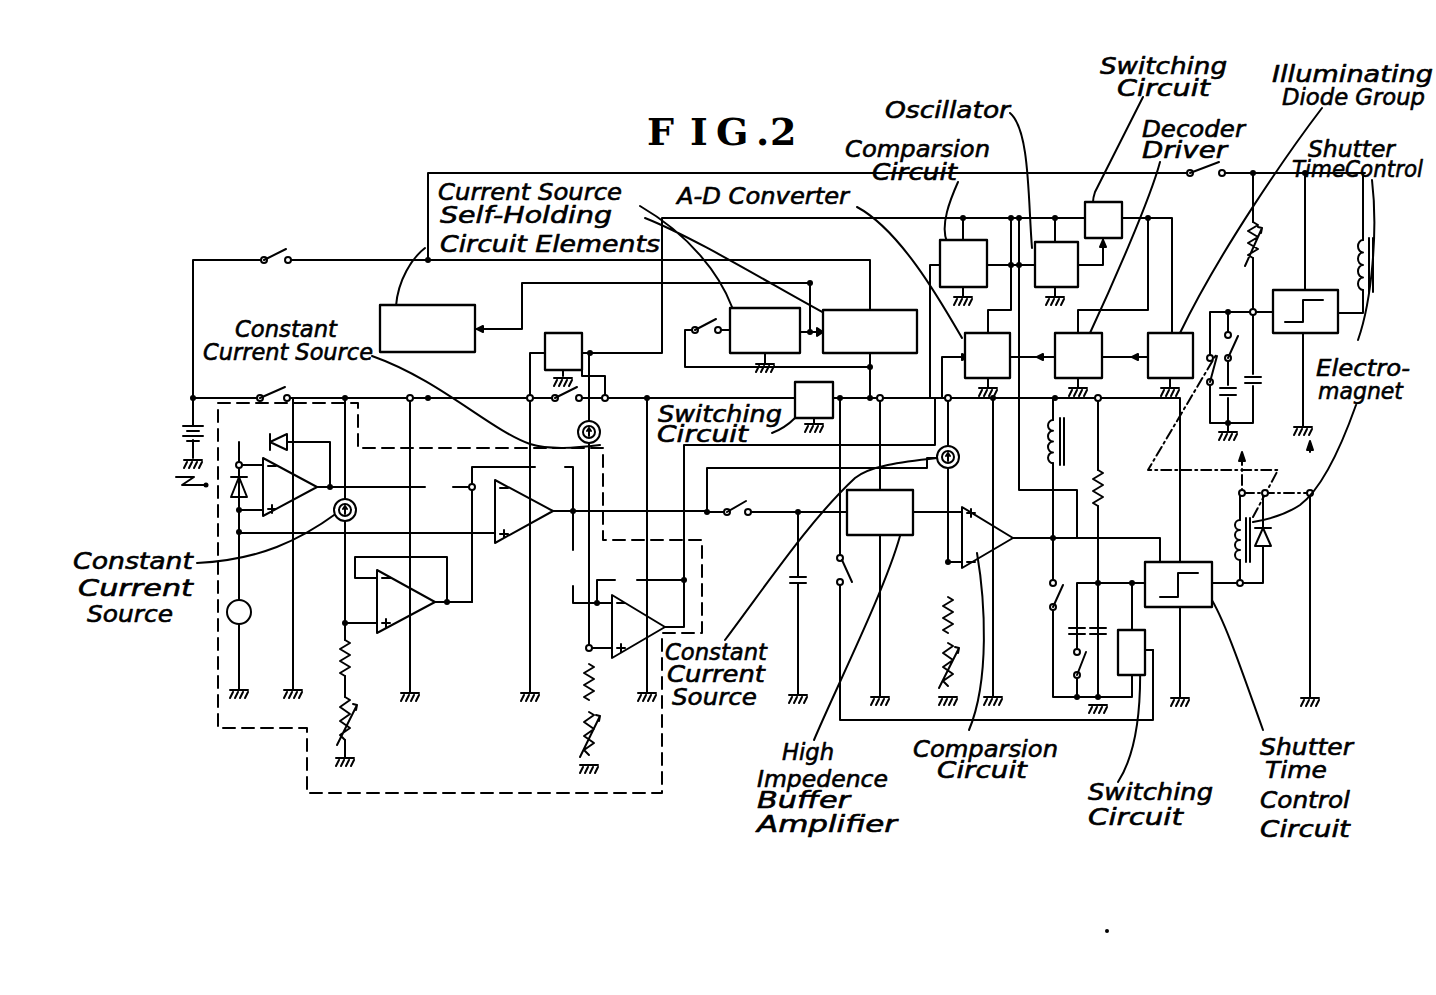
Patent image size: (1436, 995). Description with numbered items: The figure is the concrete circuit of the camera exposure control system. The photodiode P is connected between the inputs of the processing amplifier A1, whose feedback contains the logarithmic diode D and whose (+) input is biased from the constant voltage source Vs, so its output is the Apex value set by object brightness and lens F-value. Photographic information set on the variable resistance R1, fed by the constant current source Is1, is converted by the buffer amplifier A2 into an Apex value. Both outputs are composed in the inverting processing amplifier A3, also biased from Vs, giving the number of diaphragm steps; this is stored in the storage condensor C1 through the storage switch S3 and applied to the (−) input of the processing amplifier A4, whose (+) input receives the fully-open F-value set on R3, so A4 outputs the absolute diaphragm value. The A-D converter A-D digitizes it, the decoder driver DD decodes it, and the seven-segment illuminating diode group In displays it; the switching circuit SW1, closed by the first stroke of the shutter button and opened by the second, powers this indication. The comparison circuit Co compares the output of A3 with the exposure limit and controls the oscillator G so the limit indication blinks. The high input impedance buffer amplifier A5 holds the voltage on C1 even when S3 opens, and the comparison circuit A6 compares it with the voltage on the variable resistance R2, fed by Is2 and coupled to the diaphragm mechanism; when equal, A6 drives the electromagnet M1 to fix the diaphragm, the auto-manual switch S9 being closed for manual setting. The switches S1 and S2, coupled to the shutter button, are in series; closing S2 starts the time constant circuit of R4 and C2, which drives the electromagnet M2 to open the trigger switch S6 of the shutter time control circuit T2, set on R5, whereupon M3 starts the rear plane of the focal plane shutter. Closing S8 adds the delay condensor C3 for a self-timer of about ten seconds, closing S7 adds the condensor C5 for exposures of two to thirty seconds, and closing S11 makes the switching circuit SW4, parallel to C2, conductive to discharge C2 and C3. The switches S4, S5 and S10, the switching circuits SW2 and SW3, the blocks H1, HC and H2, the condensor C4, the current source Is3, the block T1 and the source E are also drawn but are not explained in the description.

The switch S1 is at (288, 388).
The switch S2 is at (560, 405).
The storage switch S3 is at (740, 516).
The switch S4 is at (1208, 178).
The switch S5 is at (275, 270).
The trigger switch S6 is at (1200, 400).
The switch for long time exposure S7 is at (1235, 346).
The switch S8 is at (1073, 667).
The auto-manual switching over switch S9 is at (1055, 595).
The switch S10 is at (705, 318).
The switch S11 is at (848, 585).
The switching circuit SW1 is at (567, 354).
The switching circuit SW2 is at (817, 400).
The switching circuit SW3 is at (1107, 220).
The switching circuit SW4 is at (1145, 645).
The current source self-holding circuit element H1 is at (427, 328).
The current source self-holding circuit element HC is at (765, 330).
The current source self-holding circuit element H2 is at (870, 331).
The processing amplifier A1 is at (290, 487).
The buffer amplifier A2 is at (406, 601).
The processing amplifier A3 is at (524, 511).
The processing amplifier A4 is at (638, 626).
The high input impedance buffer amplifier A5 is at (880, 512).
The comparison circuit A6 is at (987, 537).
The variable resistance R1 is at (356, 693).
The variable resistance R2 is at (961, 642).
The variable condensor R3 is at (601, 710).
The resistance R4 is at (1112, 488).
The resistance R5 is at (1268, 244).
The storage condensor C1 is at (790, 584).
The condensor C2 is at (1107, 617).
The delay condensor C3 is at (1084, 617).
The capacitor C4 is at (1262, 380).
The condensor for long time exposure C5 is at (1237, 398).
The constant current source Is1 is at (357, 513).
The constant current source Is2 is at (601, 434).
The constant current source Is3 is at (956, 450).
The comparison circuit Co is at (963, 263).
The oscillator G is at (1056, 264).
The A-D converter A-D is at (987, 355).
The decoder driver DD is at (1078, 355).
The illuminating diode group In is at (1170, 355).
The electromagnet M1 is at (1072, 441).
The electromagnet M2 is at (1236, 541).
The electromagnet M3 is at (1381, 265).
The shutter time control circuit T1 is at (1206, 608).
The shutter time control circuit T2 is at (1305, 294).
The diode D is at (282, 436).
The photoelectric converting element P is at (232, 494).
The battery E is at (200, 433).
The constant voltage source Vs is at (257, 597).